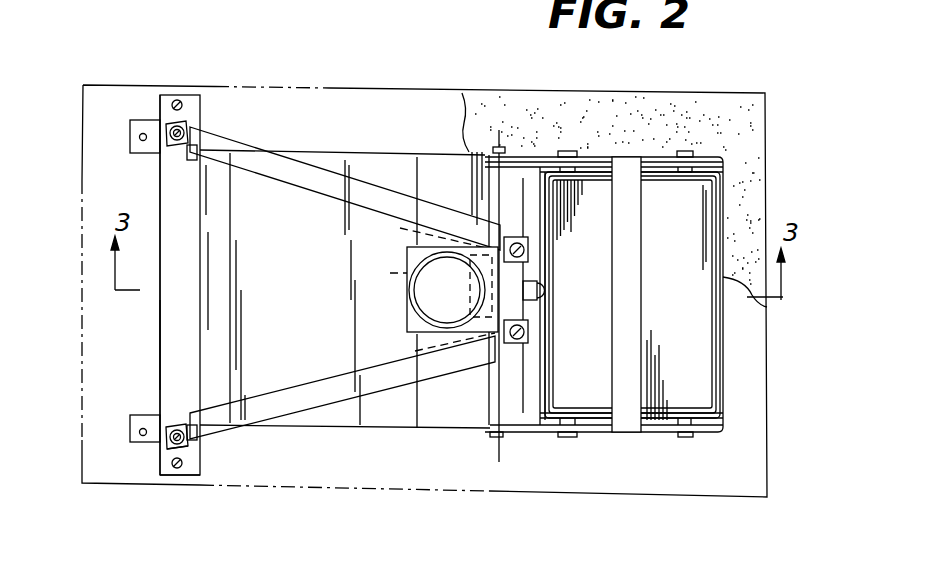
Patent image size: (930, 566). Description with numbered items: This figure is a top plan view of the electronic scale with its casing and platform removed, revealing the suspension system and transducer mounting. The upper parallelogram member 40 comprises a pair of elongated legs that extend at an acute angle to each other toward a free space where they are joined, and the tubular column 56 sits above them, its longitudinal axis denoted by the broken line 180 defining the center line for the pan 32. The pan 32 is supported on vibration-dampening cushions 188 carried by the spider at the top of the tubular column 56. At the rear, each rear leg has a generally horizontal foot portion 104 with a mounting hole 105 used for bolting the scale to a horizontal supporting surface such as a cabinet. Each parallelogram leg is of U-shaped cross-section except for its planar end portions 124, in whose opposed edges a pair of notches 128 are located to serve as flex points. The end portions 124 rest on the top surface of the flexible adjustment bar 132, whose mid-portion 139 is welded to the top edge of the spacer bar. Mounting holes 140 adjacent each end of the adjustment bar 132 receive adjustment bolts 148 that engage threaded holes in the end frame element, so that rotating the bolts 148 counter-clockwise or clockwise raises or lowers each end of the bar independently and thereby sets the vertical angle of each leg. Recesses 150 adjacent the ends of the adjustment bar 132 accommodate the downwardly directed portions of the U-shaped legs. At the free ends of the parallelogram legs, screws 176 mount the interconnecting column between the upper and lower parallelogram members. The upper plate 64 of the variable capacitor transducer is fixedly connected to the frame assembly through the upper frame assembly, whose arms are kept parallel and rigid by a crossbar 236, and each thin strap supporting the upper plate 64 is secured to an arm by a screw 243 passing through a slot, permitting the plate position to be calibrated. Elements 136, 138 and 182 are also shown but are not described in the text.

The pan 32 is at (370, 560).
The upper parallelogram member 40 is at (341, 283).
The tubular column 56 is at (410, 268).
The upper plate 64 is at (682, 214).
The foot portion 104 is at (128, 122).
The mounting hole 105 is at (139, 138).
The end portions 124 is at (190, 120).
The notches 128 is at (196, 130).
The adjustment bar 132 is at (154, 301).
The pivot arm 136 is at (183, 155).
The vertical support plate 138 is at (158, 103).
The mid-portion 139 is at (165, 343).
The mounting holes 140 is at (188, 108).
The adjustment bolts 148 is at (176, 98).
The recesses 150 is at (190, 465).
The screws 176 is at (518, 237).
The broken line 180 is at (440, 565).
The frame member 182 is at (660, 560).
The vibration-dampening cushion 188 is at (185, 565).
The crossbar 236 is at (641, 320).
The screw 243 is at (683, 151).